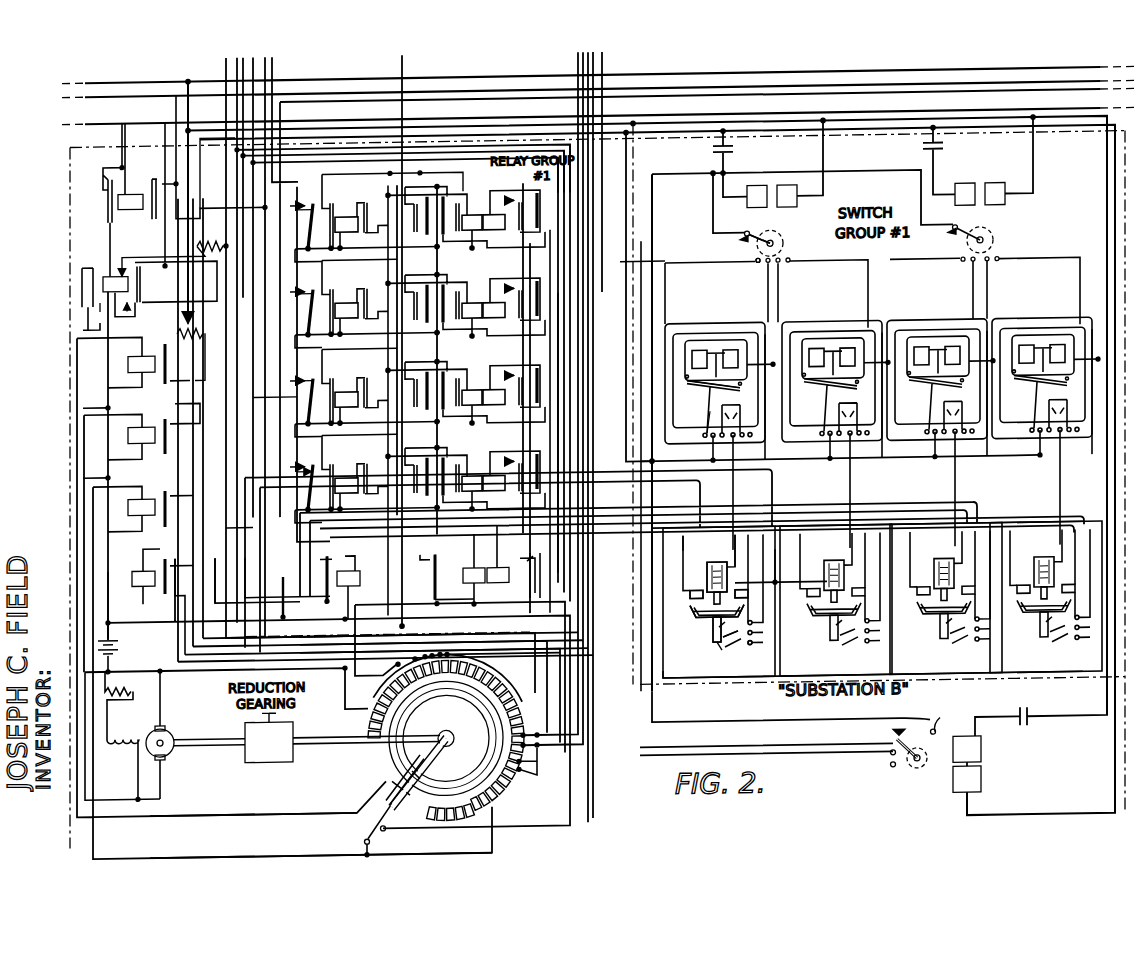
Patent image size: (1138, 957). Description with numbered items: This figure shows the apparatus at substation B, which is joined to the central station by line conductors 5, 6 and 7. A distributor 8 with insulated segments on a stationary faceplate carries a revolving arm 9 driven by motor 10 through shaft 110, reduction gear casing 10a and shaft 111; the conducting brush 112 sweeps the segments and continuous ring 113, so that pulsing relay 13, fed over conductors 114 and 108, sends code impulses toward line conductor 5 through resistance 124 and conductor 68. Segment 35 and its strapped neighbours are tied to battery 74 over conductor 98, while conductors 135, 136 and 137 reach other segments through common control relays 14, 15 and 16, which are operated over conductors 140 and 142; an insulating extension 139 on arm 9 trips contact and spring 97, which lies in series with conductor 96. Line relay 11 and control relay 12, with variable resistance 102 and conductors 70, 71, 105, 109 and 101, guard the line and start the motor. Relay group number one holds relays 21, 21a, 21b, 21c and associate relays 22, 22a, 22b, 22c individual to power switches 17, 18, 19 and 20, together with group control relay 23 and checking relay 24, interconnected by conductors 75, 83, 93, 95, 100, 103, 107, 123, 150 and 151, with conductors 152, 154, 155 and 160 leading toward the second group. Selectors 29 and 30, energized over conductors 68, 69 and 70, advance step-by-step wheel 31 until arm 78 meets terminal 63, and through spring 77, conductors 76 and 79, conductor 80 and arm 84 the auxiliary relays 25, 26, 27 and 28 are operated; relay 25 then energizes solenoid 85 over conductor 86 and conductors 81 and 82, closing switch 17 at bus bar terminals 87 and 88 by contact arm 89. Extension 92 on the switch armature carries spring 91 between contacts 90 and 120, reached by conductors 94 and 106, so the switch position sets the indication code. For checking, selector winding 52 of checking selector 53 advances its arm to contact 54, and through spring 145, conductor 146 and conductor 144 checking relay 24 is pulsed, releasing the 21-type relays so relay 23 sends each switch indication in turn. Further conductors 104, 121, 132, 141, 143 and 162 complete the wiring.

The line conductor 5 is at (418, 74).
The line conductor 6 is at (412, 113).
The line conductor 7 is at (461, 128).
The conductor 68 is at (190, 108).
The conductor 160 is at (278, 470).
The conductor 154 is at (395, 107).
The conductor 152 is at (575, 108).
The conductor 70 is at (662, 138).
The conductor 162 is at (620, 760).
The conductor 69 is at (748, 125).
The conductor 155 is at (584, 672).
The conductor 71 is at (164, 160).
The line relay 11 is at (131, 212).
The control relay 12 is at (107, 275).
The conductor 143 is at (265, 209).
The variable resistance 102 is at (208, 244).
The conductor 103 is at (310, 176).
The pulsing relay 13 is at (144, 354).
The resistance 124 is at (195, 340).
The conductor 109 is at (83, 408).
The control relay 14 is at (153, 446).
The conductor 105 is at (83, 478).
The control relay 15 is at (153, 520).
The conductor 108 is at (108, 592).
The control relay 16 is at (144, 587).
The battery 74 is at (118, 643).
The conductor 83 is at (185, 672).
The motor 10 is at (172, 736).
The reduction gear arrangement 10a is at (292, 736).
The shaft 110 is at (206, 755).
The shaft 111 is at (333, 762).
The conductor 114 is at (198, 814).
The conductor 98 is at (371, 524).
The contact and spring 97 is at (362, 838).
The extension 139 is at (386, 822).
The distributor 8 is at (447, 724).
The revolving arm 9 is at (420, 770).
The conducting brush 112 is at (416, 778).
The continuous conducting ring 113 is at (464, 786).
The distributor segment 35 is at (533, 768).
The conductor 137 is at (551, 786).
The conductor 136 is at (584, 724).
The conductor 135 is at (584, 706).
The conductor 96 is at (580, 658).
The conductor 132 is at (524, 642).
The control relay 21 is at (338, 224).
The control relay 21a is at (341, 304).
The control relay 21b is at (341, 391).
The control relay 21c is at (341, 476).
The associate relay 22 is at (496, 228).
The associate relay 22a is at (502, 306).
The associate relay 22b is at (490, 394).
The associate relay 22c is at (495, 478).
The group control relay 23 is at (500, 592).
The checking relay 24 is at (352, 580).
The conductor 107 is at (401, 577).
The conductor 75 is at (324, 565).
The conductor 93 is at (290, 555).
The conductor 100 is at (235, 565).
The conductor 101 is at (264, 548).
The conductor 95 is at (314, 542).
The conductor 123 is at (271, 388).
The conductor 104 is at (536, 480).
The conductor 150 is at (576, 511).
The conductor 151 is at (576, 523).
The conductor 140 is at (590, 165).
The conductor 141 is at (582, 200).
The conductor 142 is at (576, 231).
The conductor 144 is at (584, 616).
The conductor 76 is at (645, 240).
The conductor 94 is at (635, 237).
The conductor 106 is at (644, 271).
The arm 78 is at (748, 242).
The spring 77 is at (737, 252).
The selector 29 is at (799, 211).
The selector 30 is at (1006, 211).
The step-by-step element 31 is at (992, 251).
The conductor 79 is at (666, 309).
The terminal 63 is at (758, 275).
The auxiliary relay 25 is at (693, 342).
The auxiliary relay 26 is at (810, 343).
The auxiliary relay 27 is at (915, 345).
The auxiliary relay 28 is at (1025, 347).
The arm 84 is at (712, 406).
The conductor 80 is at (706, 414).
The power switch 17 is at (719, 602).
The power switch 18 is at (836, 600).
The power switch 19 is at (946, 599).
The power switch 20 is at (1046, 597).
The conductor 81 is at (775, 548).
The conductor 121 is at (682, 540).
The solenoid 85 is at (711, 572).
The conductor 86 is at (737, 570).
The bus bar terminal 87 is at (690, 613).
The bus bar terminal 88 is at (747, 604).
The contact arm 89 is at (700, 622).
The extension 92 is at (715, 651).
The spring 91 is at (712, 660).
The contact 90 is at (736, 662).
The contact 120 is at (752, 656).
The conductor 82 is at (689, 679).
The conductor 146 is at (784, 739).
The contact 54 is at (892, 742).
The checking selector 53 is at (919, 786).
The spring 145 is at (932, 746).
The selector winding 52 is at (980, 761).